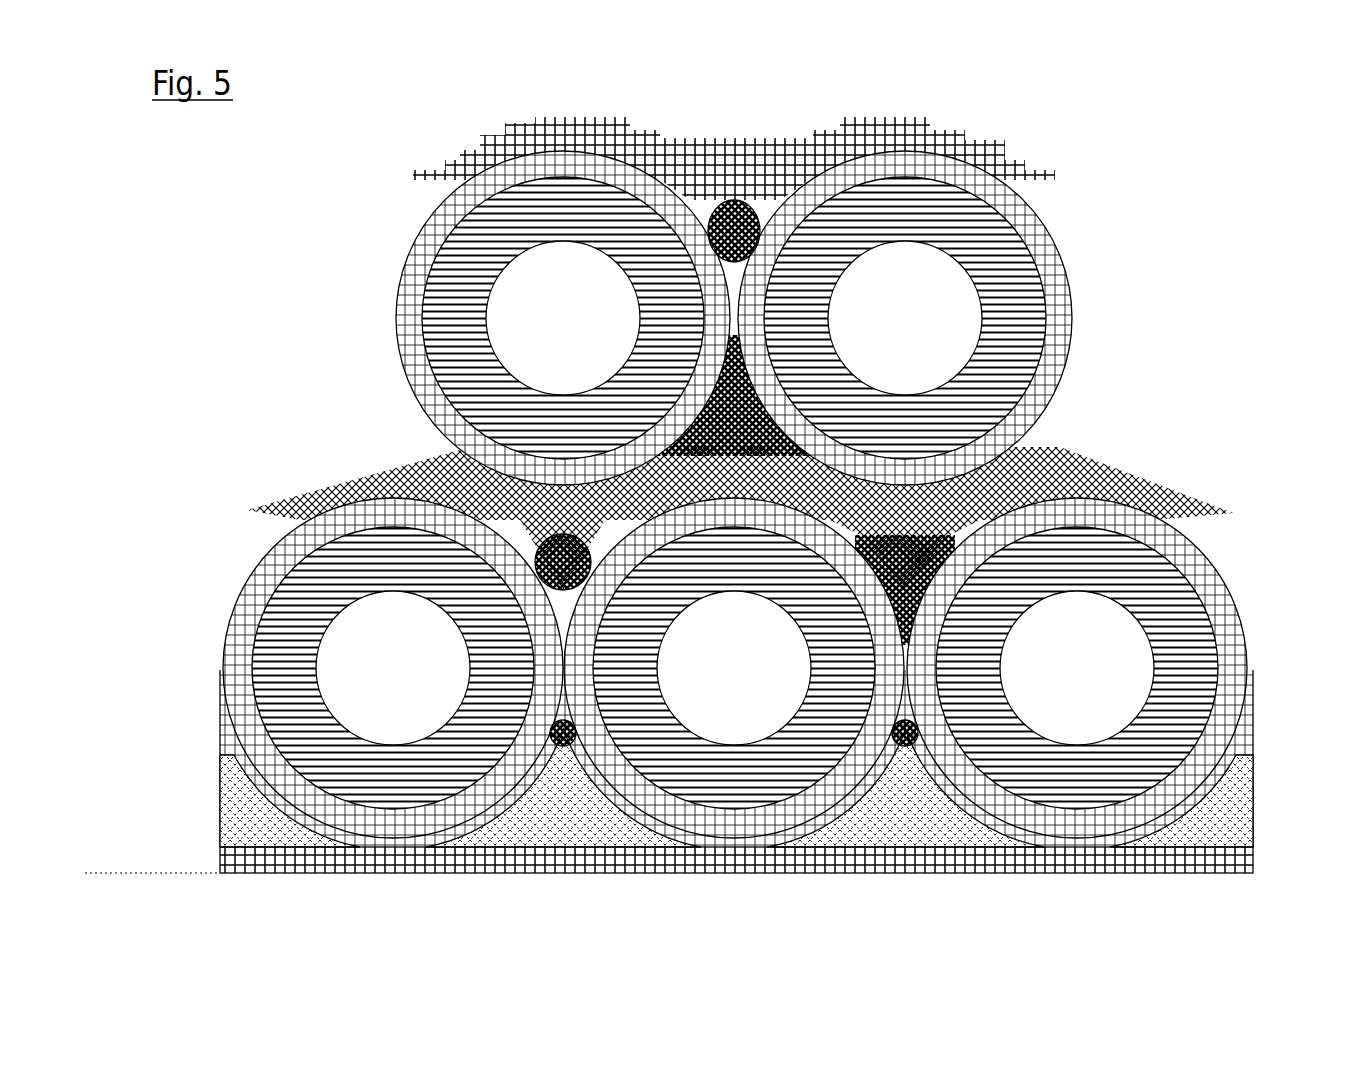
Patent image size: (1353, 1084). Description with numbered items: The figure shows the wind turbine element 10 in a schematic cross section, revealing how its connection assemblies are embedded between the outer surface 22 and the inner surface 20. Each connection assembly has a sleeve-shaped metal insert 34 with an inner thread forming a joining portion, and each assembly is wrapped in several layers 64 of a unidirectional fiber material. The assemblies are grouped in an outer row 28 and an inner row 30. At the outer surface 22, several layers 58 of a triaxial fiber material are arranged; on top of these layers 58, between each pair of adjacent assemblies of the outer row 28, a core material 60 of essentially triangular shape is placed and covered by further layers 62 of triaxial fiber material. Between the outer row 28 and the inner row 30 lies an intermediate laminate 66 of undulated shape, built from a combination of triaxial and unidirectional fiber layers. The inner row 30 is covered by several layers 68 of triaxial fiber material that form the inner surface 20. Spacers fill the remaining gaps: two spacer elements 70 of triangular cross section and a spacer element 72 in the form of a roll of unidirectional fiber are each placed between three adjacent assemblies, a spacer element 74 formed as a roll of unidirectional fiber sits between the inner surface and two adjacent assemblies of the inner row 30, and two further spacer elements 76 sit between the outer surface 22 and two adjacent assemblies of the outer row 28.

The wind turbine element 10 is at (1250, 124).
The inner surface 20 is at (758, 136).
The outer surface 22 is at (704, 891).
The outer row 28 is at (187, 609).
The inner row 30 is at (652, 318).
The metal insert 34 is at (447, 265).
The layers of triaxial fiber material 58 is at (1248, 860).
The core material 60 is at (900, 813).
The further layers of triaxial fiber material 62 is at (1237, 731).
The layers of unidirectional fiber material 64 is at (437, 218).
The intermediate laminate 66 is at (1177, 463).
The layers of triaxial fiber material 68 is at (1010, 152).
The spacer elements 70 is at (790, 392).
The spacer element 72 is at (765, 482).
The spacer element 74 is at (738, 200).
The spacer elements 76 is at (552, 745).